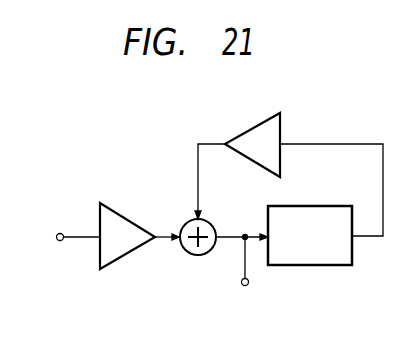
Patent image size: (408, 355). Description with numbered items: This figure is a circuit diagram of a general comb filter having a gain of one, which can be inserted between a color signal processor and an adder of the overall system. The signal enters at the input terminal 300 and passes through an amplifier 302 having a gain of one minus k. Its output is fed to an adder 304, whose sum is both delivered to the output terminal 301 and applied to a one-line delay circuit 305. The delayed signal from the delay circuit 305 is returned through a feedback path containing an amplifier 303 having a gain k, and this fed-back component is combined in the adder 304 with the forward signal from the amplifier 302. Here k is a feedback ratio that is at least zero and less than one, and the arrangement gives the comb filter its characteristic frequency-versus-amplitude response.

The input terminal 300 is at (58, 238).
The output terminal 301 is at (246, 275).
The amplifier having a gain (1-k) 302 is at (121, 208).
The amplifier having a gain k 303 is at (266, 112).
The adder 304 is at (220, 208).
The 1H delay circuit 305 is at (304, 206).